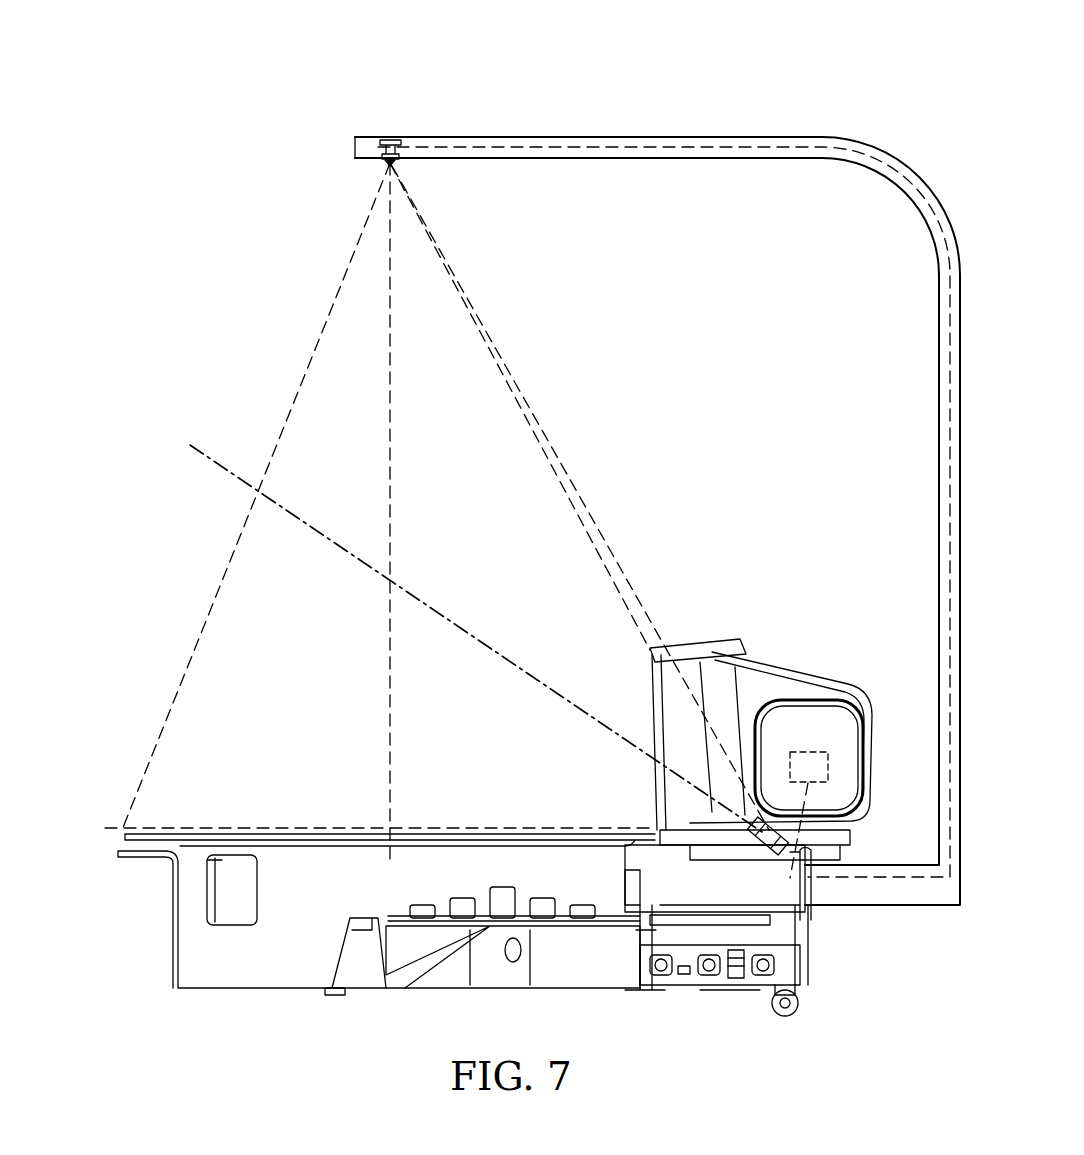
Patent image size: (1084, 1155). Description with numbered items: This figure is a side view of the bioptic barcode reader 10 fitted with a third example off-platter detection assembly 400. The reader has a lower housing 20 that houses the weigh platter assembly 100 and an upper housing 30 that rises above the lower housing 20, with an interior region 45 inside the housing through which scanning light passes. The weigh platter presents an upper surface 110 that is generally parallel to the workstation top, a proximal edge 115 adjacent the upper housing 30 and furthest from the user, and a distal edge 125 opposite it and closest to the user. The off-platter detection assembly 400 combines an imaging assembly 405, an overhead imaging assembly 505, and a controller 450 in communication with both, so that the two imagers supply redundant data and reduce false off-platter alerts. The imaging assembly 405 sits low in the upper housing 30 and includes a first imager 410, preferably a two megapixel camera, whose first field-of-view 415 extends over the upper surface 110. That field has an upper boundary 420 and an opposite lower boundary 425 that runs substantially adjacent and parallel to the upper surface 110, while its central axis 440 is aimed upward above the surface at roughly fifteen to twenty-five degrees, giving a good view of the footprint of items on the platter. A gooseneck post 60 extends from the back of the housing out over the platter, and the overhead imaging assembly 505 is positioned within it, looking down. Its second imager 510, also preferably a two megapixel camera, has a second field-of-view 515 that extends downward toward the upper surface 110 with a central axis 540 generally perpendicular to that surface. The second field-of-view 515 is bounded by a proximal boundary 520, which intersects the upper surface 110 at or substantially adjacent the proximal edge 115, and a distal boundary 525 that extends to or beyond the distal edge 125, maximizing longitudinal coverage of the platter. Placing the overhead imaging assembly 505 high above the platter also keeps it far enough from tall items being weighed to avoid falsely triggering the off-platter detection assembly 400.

The barcode reader 10 is at (258, 58).
The lower housing 20 is at (165, 955).
The upper housing 30 is at (696, 634).
The interior region 45 is at (791, 877).
The gooseneck post 60 is at (714, 133).
The weigh platter assembly 100 is at (283, 825).
The upper surface 110 is at (205, 828).
The proximal edge 115 is at (632, 856).
The distal edge 125 is at (107, 828).
The off-platter detection assembly 400 is at (700, 760).
The imaging assembly 405 is at (725, 835).
The first imager 410 is at (760, 850).
The first field-of-view 415 is at (527, 594).
The upper boundary 420 is at (500, 437).
The lower boundary 425 is at (480, 827).
The central axis 440 is at (506, 655).
The controller 450 is at (809, 752).
The overhead imaging assembly 505 is at (333, 150).
The second imager 510 is at (397, 160).
The second field-of-view 515 is at (426, 286).
The proximal boundary 520 is at (542, 447).
The distal boundary 525 is at (246, 520).
The central axis 540 is at (388, 497).